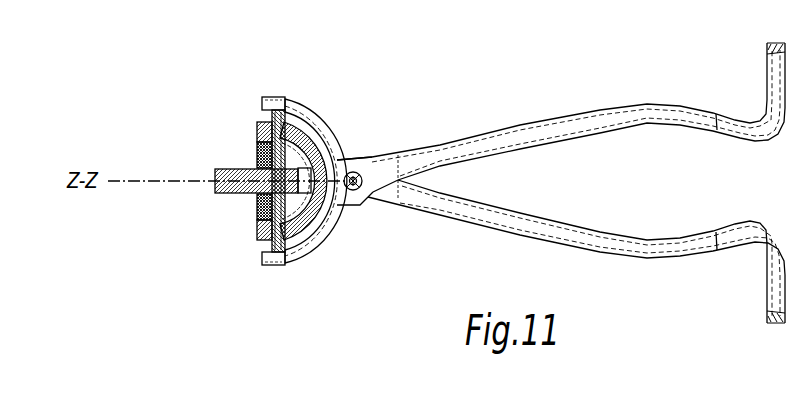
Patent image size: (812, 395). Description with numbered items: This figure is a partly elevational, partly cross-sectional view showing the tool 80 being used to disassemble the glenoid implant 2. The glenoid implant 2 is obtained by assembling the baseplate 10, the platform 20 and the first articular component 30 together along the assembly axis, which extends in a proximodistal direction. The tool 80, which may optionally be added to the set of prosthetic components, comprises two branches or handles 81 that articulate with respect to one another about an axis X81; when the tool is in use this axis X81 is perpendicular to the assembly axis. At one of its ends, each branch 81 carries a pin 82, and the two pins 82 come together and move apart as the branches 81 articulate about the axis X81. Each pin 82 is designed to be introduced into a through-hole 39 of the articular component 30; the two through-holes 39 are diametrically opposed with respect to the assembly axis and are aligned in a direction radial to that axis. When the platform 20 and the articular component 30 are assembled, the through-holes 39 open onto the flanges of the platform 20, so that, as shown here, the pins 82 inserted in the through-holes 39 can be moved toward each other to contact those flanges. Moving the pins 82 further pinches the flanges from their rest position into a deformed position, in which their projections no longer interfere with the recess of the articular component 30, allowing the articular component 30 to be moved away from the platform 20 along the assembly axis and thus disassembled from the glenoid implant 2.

The glenoid implant 2 is at (277, 181).
The baseplate 10 is at (243, 159).
The platform 20 is at (310, 214).
The first articular component 30 is at (327, 207).
The through-hole 39 is at (302, 104).
The tool 80 is at (561, 167).
The branch 81 is at (648, 122).
The pin 82 is at (257, 130).
The articulation axis X81 is at (368, 157).